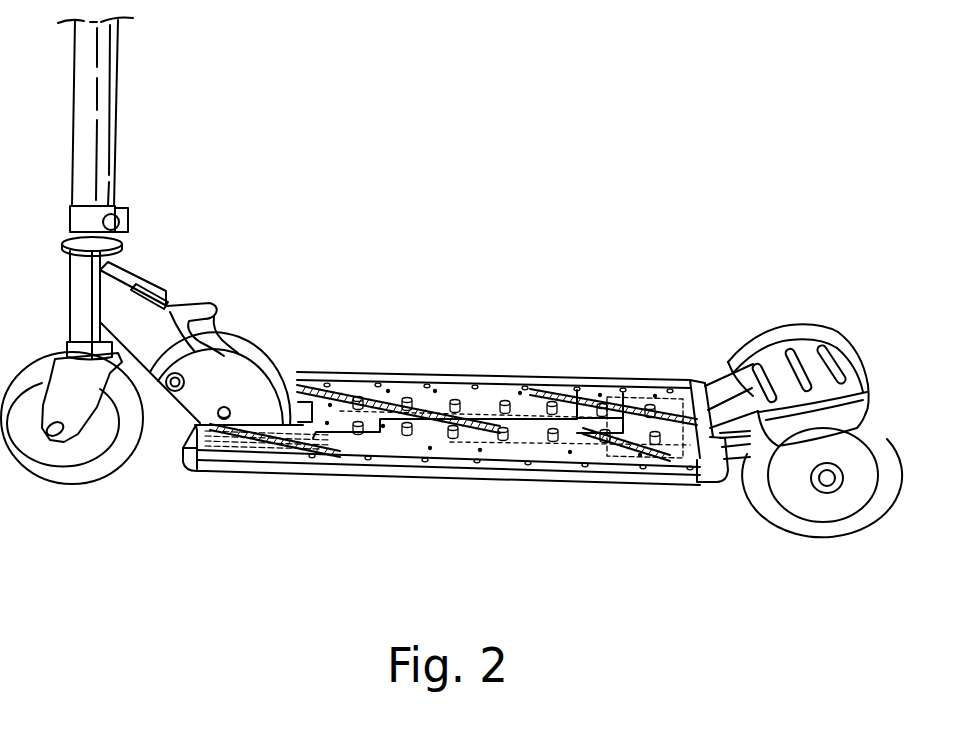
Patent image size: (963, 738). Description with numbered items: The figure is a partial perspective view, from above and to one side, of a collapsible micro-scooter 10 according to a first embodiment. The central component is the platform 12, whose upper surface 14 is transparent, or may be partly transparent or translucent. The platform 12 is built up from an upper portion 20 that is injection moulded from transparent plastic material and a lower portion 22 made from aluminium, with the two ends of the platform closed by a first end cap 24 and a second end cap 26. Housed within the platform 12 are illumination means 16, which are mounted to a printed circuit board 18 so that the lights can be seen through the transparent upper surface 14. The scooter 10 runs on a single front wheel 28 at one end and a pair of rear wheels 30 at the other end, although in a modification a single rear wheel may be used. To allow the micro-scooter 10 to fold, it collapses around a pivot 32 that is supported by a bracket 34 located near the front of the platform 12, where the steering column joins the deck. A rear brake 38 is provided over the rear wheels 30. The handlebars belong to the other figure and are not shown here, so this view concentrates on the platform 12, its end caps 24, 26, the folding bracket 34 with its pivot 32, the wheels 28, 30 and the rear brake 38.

The scooter 10 is at (411, 341).
The platform 12 is at (530, 393).
The upper surface 14 is at (627, 395).
The illumination means 16 is at (527, 452).
The printed circuit board 18 is at (585, 425).
The upper portion 20 is at (337, 453).
The lower portion 22 is at (418, 477).
The first end cap 24 is at (188, 455).
The second end cap 26 is at (713, 480).
The front wheel 28 is at (75, 478).
The rear wheels 30 is at (828, 527).
The pivot 32 is at (224, 421).
The bracket 34 is at (252, 356).
The rear brake 38 is at (785, 333).